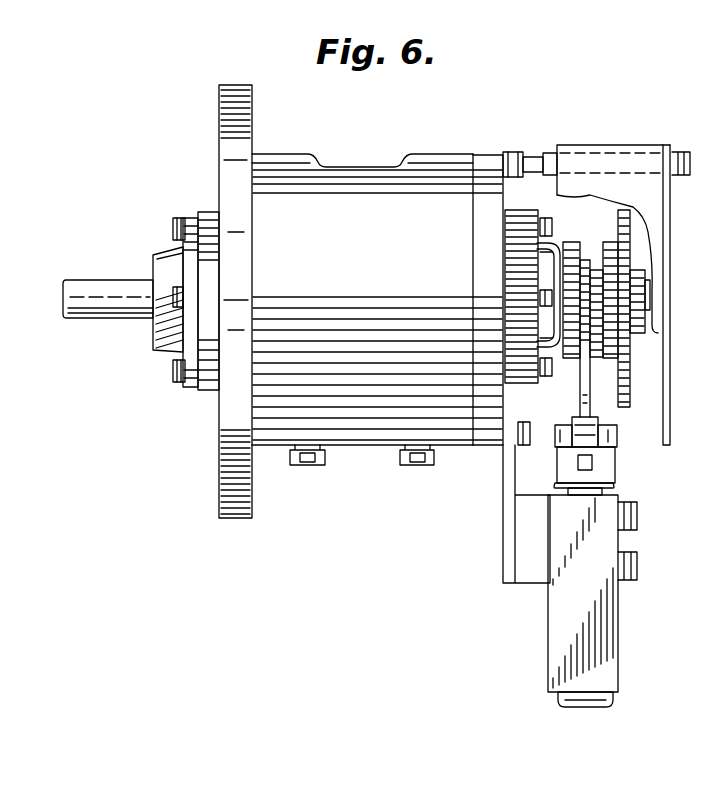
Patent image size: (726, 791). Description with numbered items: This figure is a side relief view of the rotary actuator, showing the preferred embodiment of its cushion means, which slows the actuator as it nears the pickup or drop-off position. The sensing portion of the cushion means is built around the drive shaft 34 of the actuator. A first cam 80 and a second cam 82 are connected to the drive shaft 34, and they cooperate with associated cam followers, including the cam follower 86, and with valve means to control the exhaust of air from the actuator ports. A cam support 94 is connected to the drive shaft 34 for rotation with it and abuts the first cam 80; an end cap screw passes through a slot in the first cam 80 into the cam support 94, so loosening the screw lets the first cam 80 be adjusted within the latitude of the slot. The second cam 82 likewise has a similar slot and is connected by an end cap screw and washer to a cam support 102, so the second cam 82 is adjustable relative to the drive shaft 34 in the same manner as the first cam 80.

The drive shaft 34 is at (560, 268).
The first cam 80 is at (627, 382).
The second cam 82 is at (587, 390).
The cam follower 86 is at (578, 436).
The cam support 94 is at (572, 358).
The cam support 102 is at (616, 234).